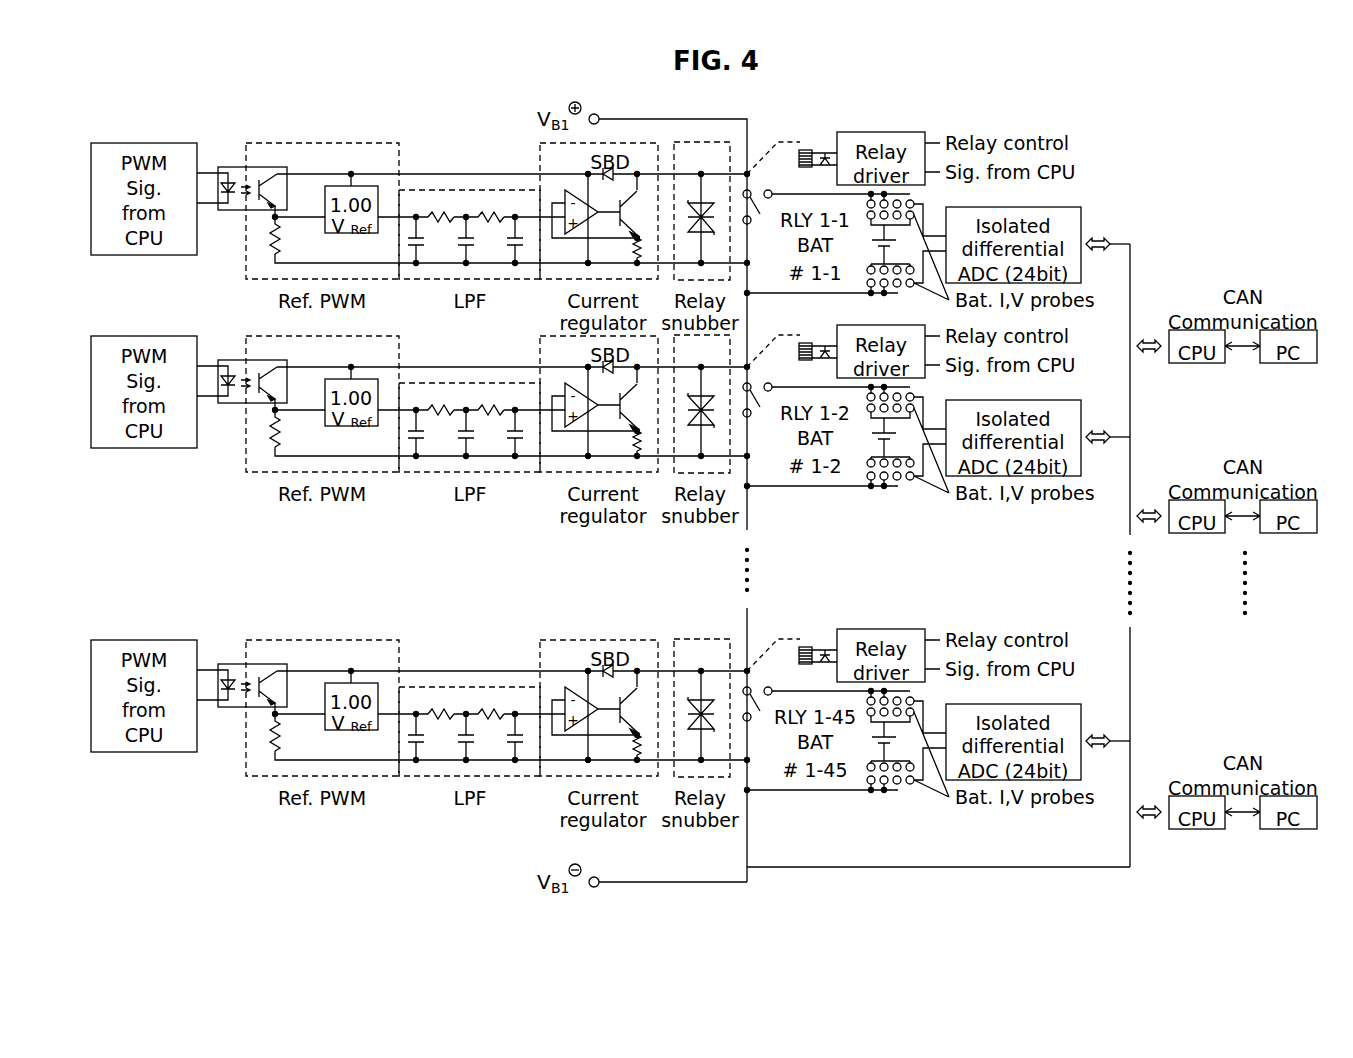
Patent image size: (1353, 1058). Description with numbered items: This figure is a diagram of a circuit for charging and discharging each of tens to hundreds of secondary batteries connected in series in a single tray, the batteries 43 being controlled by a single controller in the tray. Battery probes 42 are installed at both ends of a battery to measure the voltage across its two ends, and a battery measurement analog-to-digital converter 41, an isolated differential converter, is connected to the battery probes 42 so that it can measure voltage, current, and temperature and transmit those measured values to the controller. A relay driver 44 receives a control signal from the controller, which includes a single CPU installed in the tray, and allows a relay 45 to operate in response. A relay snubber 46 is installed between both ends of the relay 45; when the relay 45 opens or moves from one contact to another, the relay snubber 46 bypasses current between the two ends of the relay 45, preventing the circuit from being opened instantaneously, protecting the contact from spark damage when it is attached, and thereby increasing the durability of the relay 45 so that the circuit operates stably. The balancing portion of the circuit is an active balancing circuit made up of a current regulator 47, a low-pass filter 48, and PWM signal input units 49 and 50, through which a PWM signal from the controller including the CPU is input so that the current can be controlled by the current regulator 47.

The battery measurement analog-to-digital converter 41 is at (1082, 400).
The battery probes 42 is at (1004, 466).
The batteries 43 is at (877, 441).
The relay driver 44 is at (886, 323).
The relay 45 is at (761, 410).
The relay snubber 46 is at (752, 331).
The current regulator 47 is at (527, 331).
The low-pass filter 48 is at (426, 474).
The PWM signal input unit 49 is at (326, 335).
The PWM signal input unit 50 is at (145, 335).